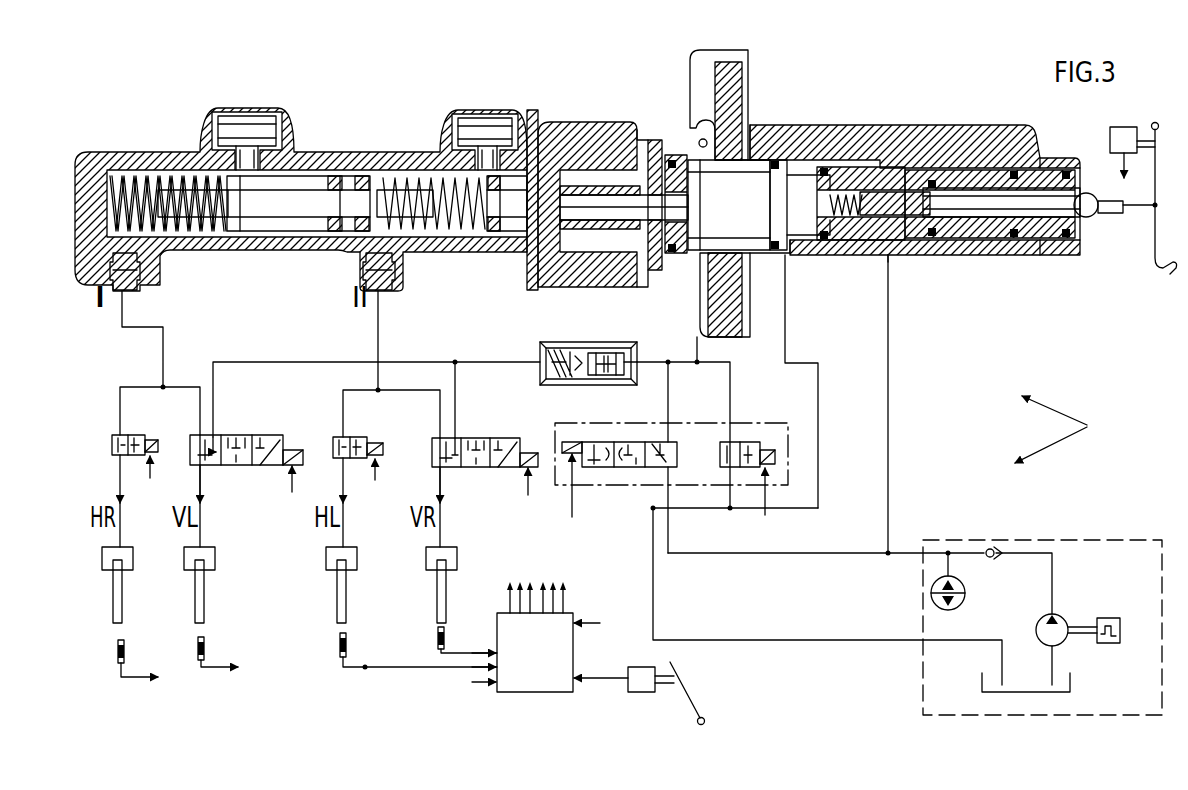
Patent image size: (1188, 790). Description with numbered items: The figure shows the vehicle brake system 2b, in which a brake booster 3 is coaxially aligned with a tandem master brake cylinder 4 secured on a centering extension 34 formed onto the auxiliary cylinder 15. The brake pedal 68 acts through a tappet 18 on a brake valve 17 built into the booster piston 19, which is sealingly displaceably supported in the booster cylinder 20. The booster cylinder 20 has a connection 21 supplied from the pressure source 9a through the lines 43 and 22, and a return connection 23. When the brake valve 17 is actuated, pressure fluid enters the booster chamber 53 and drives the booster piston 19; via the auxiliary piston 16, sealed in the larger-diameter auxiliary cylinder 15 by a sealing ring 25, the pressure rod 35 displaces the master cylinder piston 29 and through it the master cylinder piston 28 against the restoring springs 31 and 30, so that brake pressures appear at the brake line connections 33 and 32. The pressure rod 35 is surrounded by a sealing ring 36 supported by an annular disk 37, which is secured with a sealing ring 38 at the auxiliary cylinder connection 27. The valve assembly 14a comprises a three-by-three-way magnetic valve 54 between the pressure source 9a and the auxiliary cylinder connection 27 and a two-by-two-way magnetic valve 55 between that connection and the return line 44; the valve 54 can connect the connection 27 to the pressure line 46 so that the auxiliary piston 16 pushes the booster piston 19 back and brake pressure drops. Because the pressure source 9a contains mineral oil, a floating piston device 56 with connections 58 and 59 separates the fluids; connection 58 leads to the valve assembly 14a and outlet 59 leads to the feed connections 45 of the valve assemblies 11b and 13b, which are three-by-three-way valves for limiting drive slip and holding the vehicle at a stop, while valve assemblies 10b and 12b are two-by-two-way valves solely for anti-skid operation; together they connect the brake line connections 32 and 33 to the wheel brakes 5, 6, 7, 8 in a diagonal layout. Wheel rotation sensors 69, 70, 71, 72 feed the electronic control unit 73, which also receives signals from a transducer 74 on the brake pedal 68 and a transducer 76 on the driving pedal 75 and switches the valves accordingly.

The vehicle brake system 2b is at (1069, 429).
The brake booster 3 is at (1008, 123).
The master brake cylinder 4 is at (363, 150).
The wheel brake 5 is at (357, 555).
The wheel brake 6 is at (459, 548).
The wheel brake 7 is at (133, 555).
The wheel brake 8 is at (215, 555).
The pressure source 9a is at (1026, 540).
The valve assembly 10b is at (138, 435).
The valve assembly 11b is at (280, 438).
The valve assembly 12b is at (367, 437).
The valve assembly 13b is at (527, 423).
The valve assembly 14a is at (750, 422).
The auxiliary cylinder 15 is at (757, 160).
The auxiliary piston 16 is at (807, 158).
The brake valve 17 is at (920, 165).
The tappet 18 is at (1114, 216).
The booster piston 19 is at (990, 168).
The booster cylinder 20 is at (1047, 252).
The connection 21 is at (897, 262).
The line 22 is at (888, 438).
The return connection 23 is at (791, 255).
The sealing ring 25 is at (779, 160).
The auxiliary cylinder connection 27 is at (745, 272).
The master cylinder piston 28 is at (296, 190).
The master cylinder piston 29 is at (532, 145).
The restoring spring 30 is at (146, 175).
The restoring spring 31 is at (435, 177).
The brake line connection 32 is at (137, 290).
The brake line connection 33 is at (393, 291).
The centering extension 34 is at (567, 128).
The pressure rod 35 is at (717, 195).
The sealing ring 36 is at (649, 140).
The annular disk 37 is at (693, 140).
The sealing ring 38 is at (675, 253).
The line 43 is at (914, 552).
The return line 44 is at (868, 640).
The feed connection 45 is at (215, 435).
The pressure line 46 is at (848, 552).
The booster chamber 53 is at (934, 236).
The magnetic valve 54 is at (585, 450).
The magnetic valve 55 is at (753, 464).
The floating piston device 56 is at (541, 336).
The connection 58 is at (637, 362).
The connection 59 is at (540, 362).
The brake pedal 68 is at (1158, 260).
The wheel rotation sensor 69 is at (340, 640).
The wheel rotation sensor 70 is at (438, 640).
The wheel rotation sensor 71 is at (124, 648).
The wheel rotation sensor 72 is at (204, 648).
The electronic control unit 73 is at (537, 678).
The signal transducer 74 is at (1110, 138).
The driving pedal 75 is at (686, 676).
The signal transducer 76 is at (650, 688).